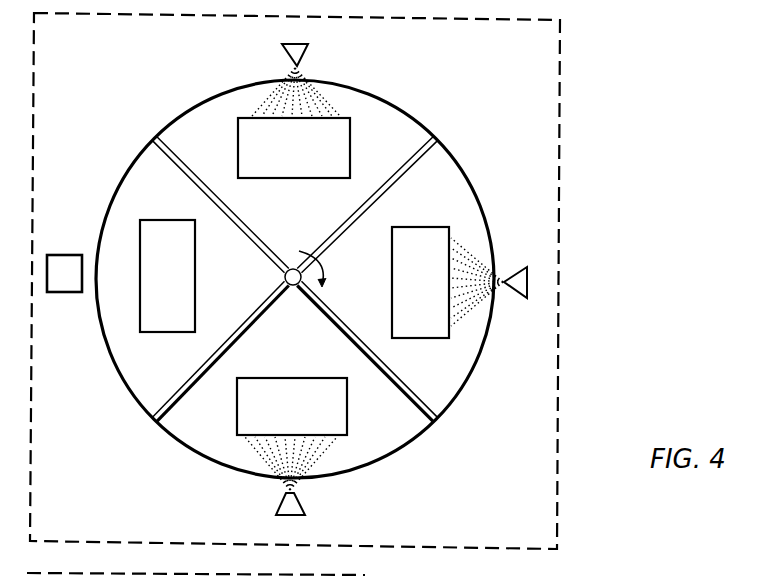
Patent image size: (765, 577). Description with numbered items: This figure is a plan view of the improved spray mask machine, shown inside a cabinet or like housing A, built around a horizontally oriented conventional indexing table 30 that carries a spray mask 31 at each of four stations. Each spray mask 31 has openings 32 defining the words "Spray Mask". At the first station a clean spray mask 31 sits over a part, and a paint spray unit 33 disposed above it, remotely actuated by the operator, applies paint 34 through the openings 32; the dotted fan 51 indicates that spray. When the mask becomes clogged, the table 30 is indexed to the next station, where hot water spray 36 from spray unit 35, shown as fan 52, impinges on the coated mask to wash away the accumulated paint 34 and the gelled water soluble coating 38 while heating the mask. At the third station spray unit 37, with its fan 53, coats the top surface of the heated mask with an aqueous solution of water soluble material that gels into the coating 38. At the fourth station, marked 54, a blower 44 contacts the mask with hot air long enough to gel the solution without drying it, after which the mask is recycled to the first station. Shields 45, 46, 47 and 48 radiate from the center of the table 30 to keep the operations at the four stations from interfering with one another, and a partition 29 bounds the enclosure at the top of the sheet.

The partition wall 29 is at (305, 5).
The cabinet A is at (558, 178).
The indexing table 30 is at (448, 165).
The spray mask 31 is at (346, 128).
The openings 32 is at (318, 165).
The paint spray unit 33 is at (307, 52).
The paint 34 is at (322, 100).
The spray unit 35 is at (512, 274).
The hot water spray 36 is at (475, 332).
The spray unit 37 is at (306, 506).
The gelled water soluble coating 38 is at (271, 470).
The blower 44 is at (64, 273).
The shield 45 is at (243, 210).
The shield 46 is at (393, 195).
The shield 47 is at (332, 336).
The shield 48 is at (234, 330).
The spray fan 51 is at (296, 92).
The spray fan 52 is at (477, 282).
The spray fan 53 is at (291, 463).
The turntable position 54 is at (122, 280).